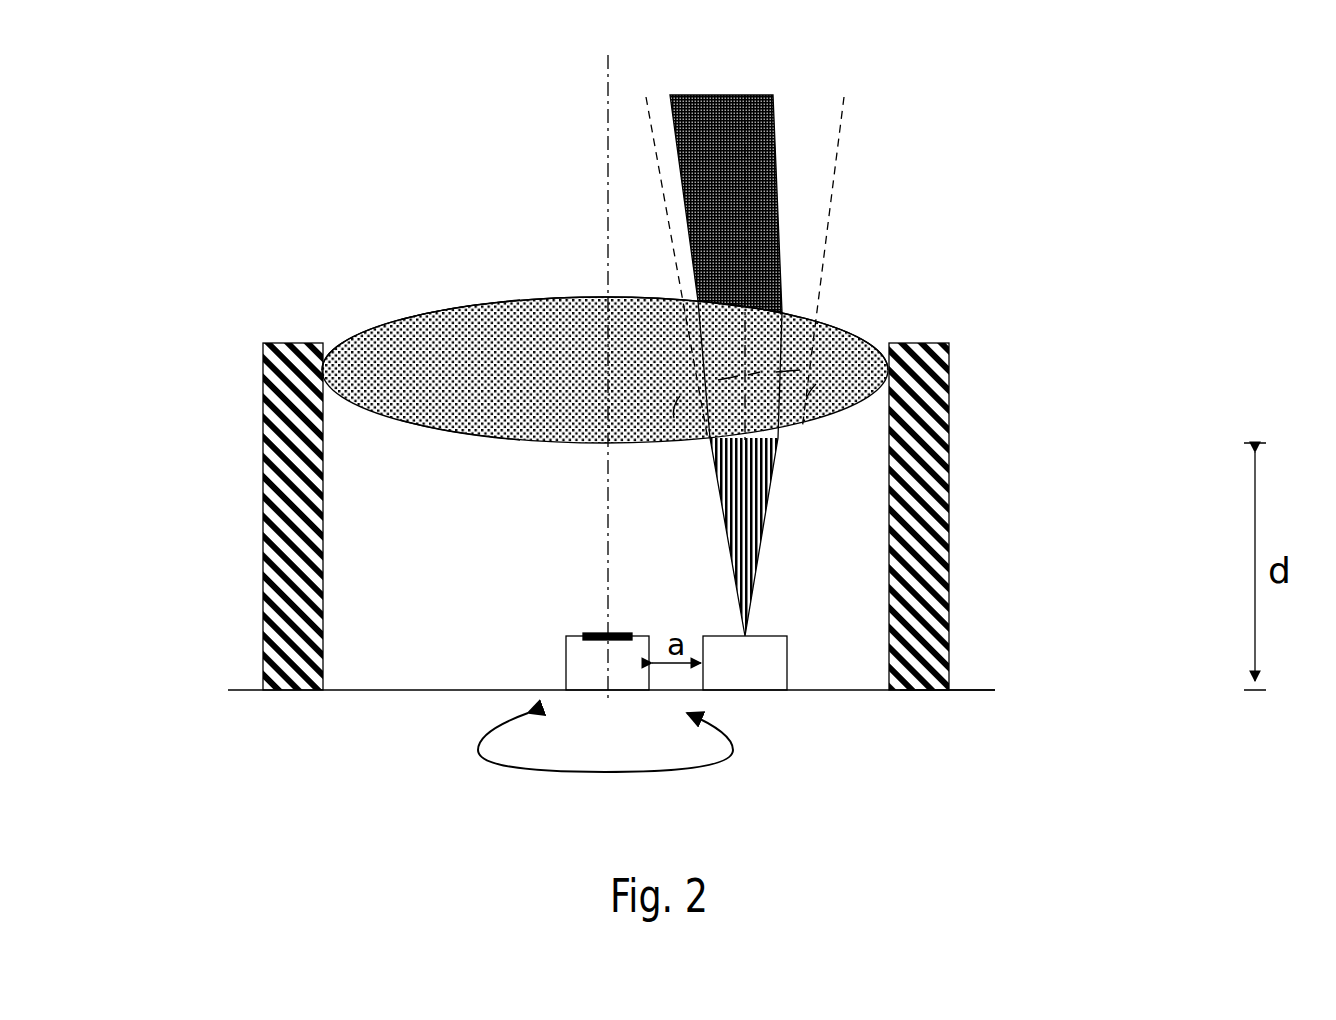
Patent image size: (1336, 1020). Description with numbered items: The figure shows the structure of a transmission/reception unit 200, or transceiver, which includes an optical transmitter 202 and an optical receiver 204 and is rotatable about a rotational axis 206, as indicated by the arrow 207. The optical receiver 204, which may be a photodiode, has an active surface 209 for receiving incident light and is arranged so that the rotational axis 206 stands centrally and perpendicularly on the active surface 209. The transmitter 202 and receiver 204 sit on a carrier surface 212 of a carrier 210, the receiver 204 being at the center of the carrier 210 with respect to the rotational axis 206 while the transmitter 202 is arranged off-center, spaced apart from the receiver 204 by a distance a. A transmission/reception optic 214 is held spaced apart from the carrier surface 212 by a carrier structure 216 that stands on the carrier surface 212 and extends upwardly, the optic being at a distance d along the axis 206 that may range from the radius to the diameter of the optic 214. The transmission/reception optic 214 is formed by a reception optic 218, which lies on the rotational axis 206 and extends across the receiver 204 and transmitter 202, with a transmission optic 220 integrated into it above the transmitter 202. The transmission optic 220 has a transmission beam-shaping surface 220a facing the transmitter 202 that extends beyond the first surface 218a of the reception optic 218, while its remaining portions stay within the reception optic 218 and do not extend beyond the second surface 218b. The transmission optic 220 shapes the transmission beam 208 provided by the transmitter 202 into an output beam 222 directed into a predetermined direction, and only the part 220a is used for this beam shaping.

The transmission/reception unit 200 is at (324, 164).
The optical transmitter 202 is at (781, 650).
The optical receiver 204 is at (566, 663).
The rotational axis 206 is at (607, 83).
The arrow 207 is at (526, 771).
The transmission beam 208 is at (759, 556).
The active surface 209 is at (600, 633).
The carrier 210 is at (960, 693).
The carrier surface 212 is at (394, 688).
The transmission/reception optic 214 is at (552, 292).
The carrier structure 216 is at (280, 623).
The reception optic 218 is at (508, 297).
The first surface of the reception optic 218a is at (437, 430).
The second surface of the reception optic 218b is at (467, 304).
The transmission optic 220 is at (803, 380).
The transmission beam-shaping surface 220a is at (779, 452).
The output beam 222 is at (781, 237).